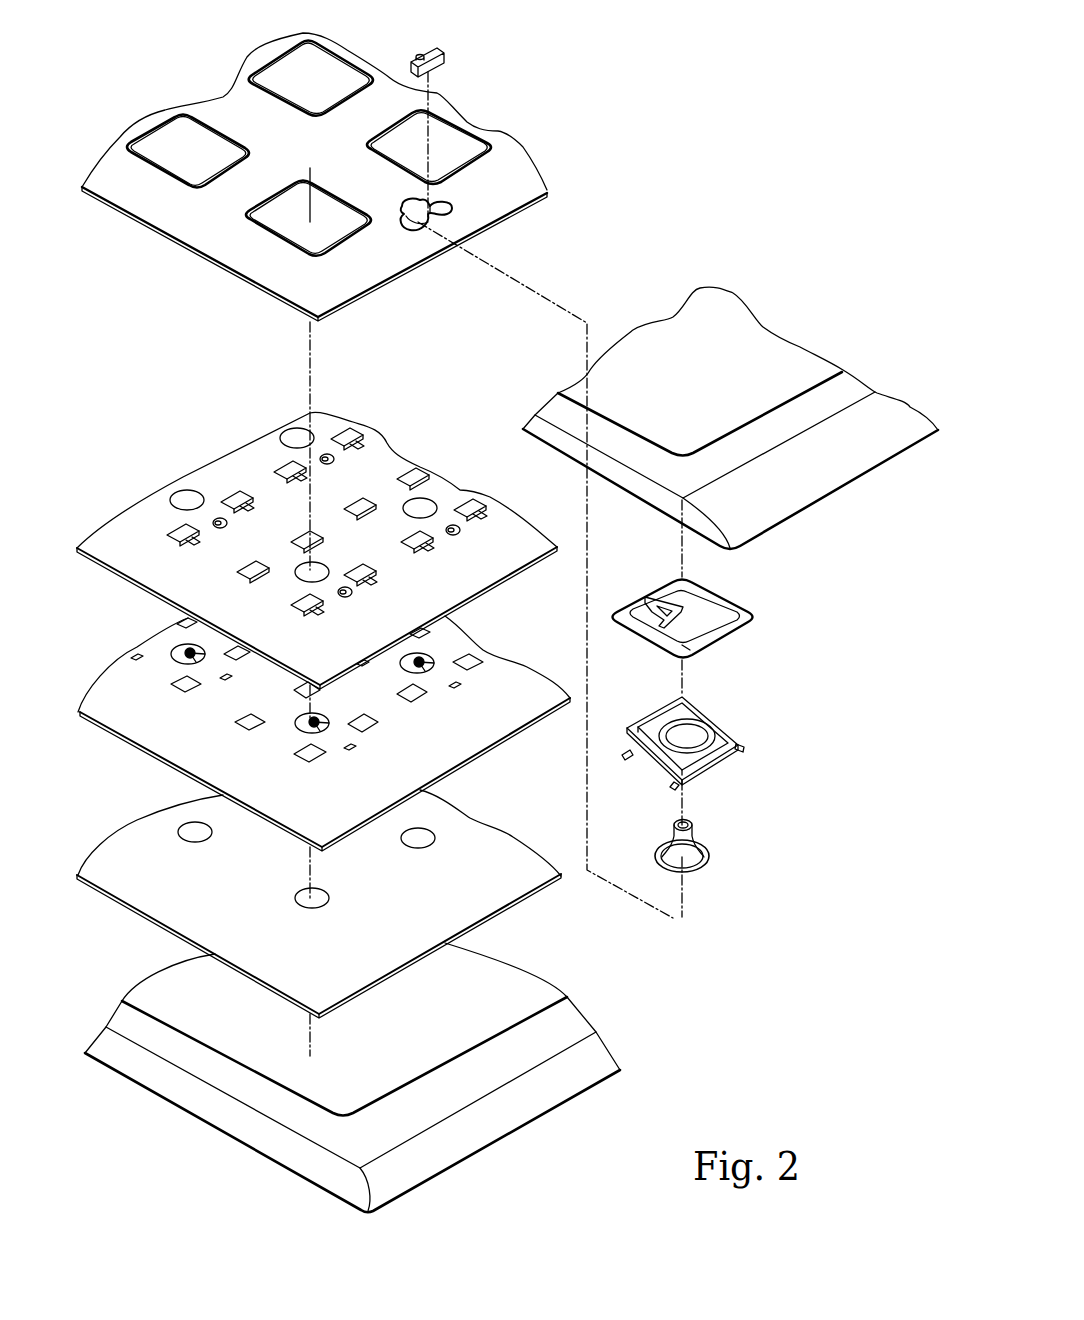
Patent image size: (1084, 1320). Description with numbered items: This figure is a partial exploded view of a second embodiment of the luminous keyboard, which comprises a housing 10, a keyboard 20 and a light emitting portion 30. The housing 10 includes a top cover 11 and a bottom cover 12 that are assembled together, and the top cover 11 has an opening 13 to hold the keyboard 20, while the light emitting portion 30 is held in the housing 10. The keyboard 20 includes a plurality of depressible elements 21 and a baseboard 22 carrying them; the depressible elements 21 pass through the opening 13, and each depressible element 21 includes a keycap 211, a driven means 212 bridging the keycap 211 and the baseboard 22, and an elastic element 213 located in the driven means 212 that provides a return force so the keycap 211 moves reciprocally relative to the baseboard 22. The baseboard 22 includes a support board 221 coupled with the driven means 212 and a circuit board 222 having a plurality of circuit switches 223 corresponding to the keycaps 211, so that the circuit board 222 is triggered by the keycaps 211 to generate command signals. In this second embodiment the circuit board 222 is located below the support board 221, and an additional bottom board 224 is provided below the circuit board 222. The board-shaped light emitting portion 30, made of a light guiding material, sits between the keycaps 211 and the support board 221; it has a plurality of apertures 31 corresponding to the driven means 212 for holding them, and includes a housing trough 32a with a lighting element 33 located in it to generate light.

The housing 10 is at (511, 746).
The top cover 11 is at (730, 576).
The bottom cover 12 is at (446, 1077).
The opening 13 is at (747, 345).
The keyboard 20 is at (339, 697).
The depressible element 21 is at (730, 726).
The keycap 211 is at (686, 647).
The driven means 212 is at (715, 762).
The elastic element 213 is at (725, 846).
The baseboard 22 is at (339, 715).
The support board 221 is at (460, 497).
The circuit board 222 is at (324, 720).
The circuit switch 223 is at (423, 662).
The bottom board 224 is at (319, 899).
The light emitting portion 30 is at (339, 193).
The aperture 31 is at (490, 143).
The housing trough 32a is at (460, 207).
The lighting element 33 is at (443, 56).